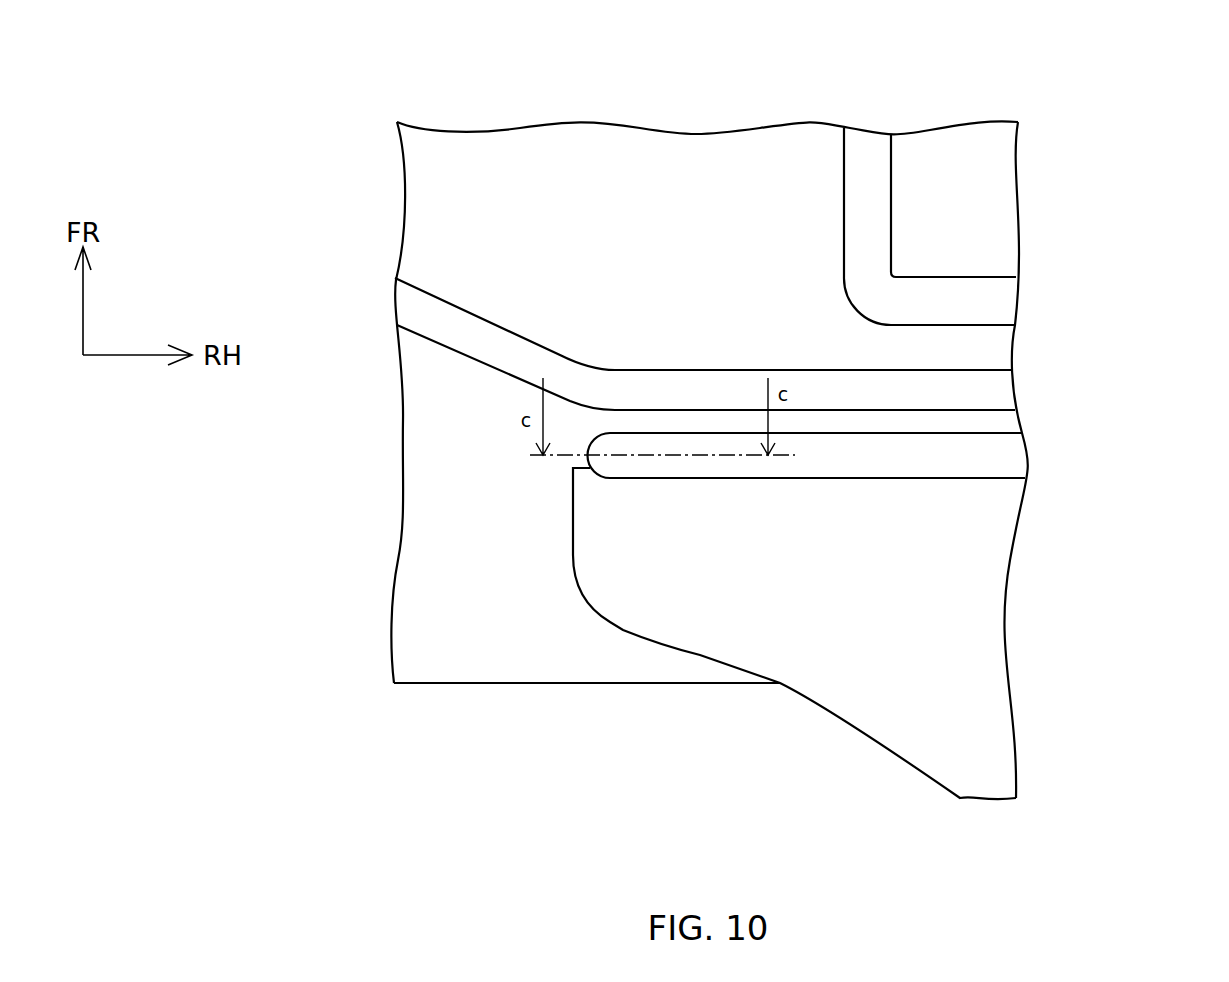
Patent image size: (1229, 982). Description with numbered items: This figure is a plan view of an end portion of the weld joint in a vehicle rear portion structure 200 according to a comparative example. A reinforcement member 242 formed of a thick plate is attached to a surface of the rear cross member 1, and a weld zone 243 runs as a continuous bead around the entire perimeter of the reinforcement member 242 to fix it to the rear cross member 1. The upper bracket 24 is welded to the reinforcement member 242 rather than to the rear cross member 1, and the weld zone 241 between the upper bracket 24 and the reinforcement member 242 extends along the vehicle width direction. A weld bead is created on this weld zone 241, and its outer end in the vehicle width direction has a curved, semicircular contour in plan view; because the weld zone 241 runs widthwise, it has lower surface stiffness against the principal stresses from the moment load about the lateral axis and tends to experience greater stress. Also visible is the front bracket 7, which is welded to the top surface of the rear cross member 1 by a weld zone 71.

The rear cross member 1 is at (677, 195).
The front bracket 7 is at (950, 160).
The weld zone 71 is at (990, 305).
The upper bracket 24 is at (880, 705).
The weld zone 241 is at (965, 462).
The reinforcement member 242 is at (495, 663).
The weld zone 243 is at (990, 392).
The vehicle rear portion structure 200 is at (635, 733).